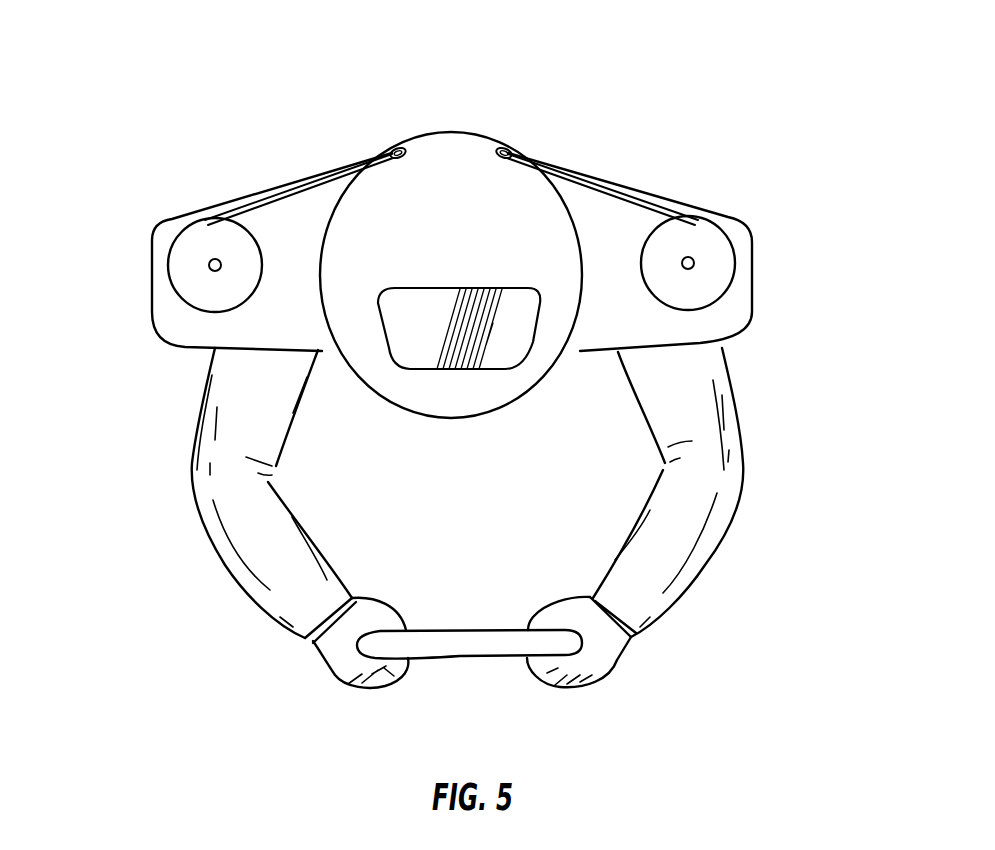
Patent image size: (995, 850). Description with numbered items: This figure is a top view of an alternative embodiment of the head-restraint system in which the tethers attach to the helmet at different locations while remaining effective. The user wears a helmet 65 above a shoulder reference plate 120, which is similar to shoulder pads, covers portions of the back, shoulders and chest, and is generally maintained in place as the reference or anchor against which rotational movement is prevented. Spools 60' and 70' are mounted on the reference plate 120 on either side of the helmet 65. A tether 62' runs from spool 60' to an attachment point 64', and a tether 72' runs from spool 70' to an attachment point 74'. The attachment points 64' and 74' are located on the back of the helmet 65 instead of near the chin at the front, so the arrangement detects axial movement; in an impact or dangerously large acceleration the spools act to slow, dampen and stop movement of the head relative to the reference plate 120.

The spool 60' is at (144, 271).
The spool 70' is at (764, 258).
The tether 62' is at (299, 153).
The tether 72' is at (602, 153).
The attachment point 64' is at (401, 83).
The attachment point 74' is at (530, 83).
The helmet 65 is at (461, 238).
The shoulder reference plate 120 is at (273, 318).